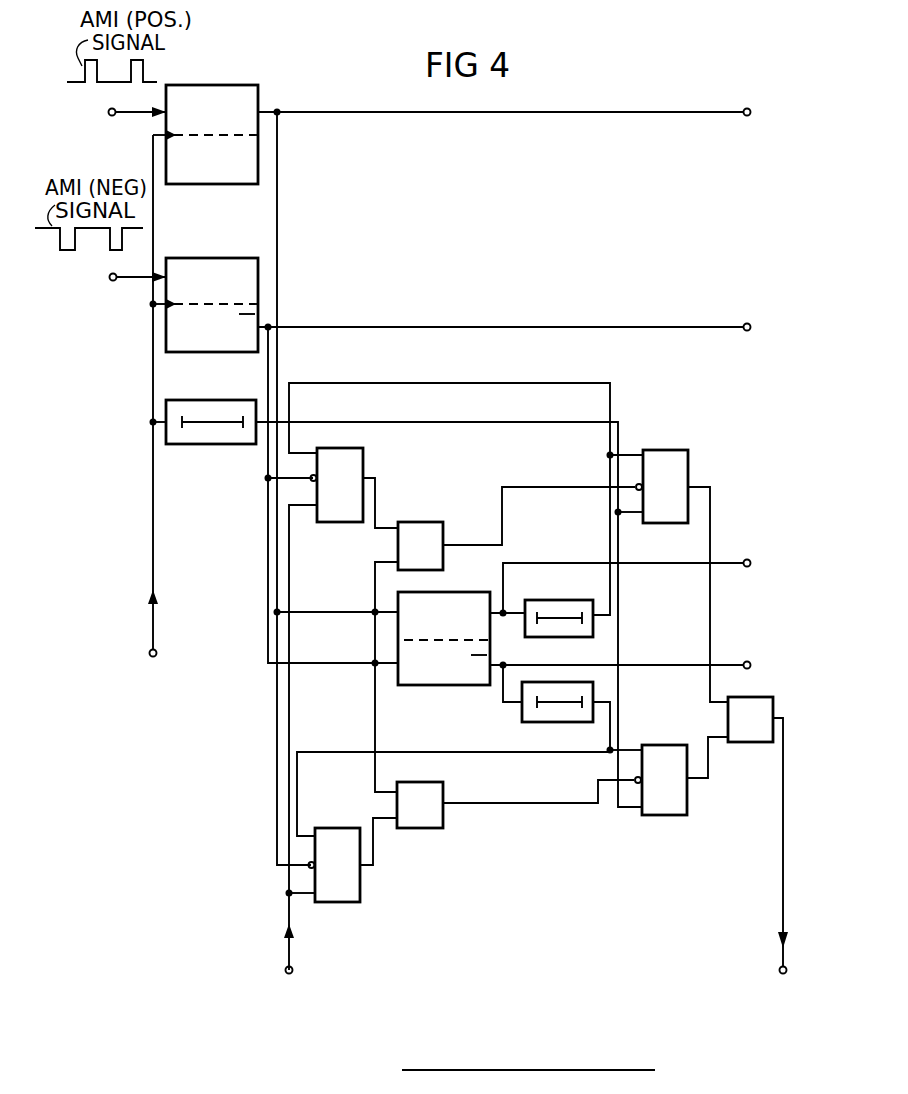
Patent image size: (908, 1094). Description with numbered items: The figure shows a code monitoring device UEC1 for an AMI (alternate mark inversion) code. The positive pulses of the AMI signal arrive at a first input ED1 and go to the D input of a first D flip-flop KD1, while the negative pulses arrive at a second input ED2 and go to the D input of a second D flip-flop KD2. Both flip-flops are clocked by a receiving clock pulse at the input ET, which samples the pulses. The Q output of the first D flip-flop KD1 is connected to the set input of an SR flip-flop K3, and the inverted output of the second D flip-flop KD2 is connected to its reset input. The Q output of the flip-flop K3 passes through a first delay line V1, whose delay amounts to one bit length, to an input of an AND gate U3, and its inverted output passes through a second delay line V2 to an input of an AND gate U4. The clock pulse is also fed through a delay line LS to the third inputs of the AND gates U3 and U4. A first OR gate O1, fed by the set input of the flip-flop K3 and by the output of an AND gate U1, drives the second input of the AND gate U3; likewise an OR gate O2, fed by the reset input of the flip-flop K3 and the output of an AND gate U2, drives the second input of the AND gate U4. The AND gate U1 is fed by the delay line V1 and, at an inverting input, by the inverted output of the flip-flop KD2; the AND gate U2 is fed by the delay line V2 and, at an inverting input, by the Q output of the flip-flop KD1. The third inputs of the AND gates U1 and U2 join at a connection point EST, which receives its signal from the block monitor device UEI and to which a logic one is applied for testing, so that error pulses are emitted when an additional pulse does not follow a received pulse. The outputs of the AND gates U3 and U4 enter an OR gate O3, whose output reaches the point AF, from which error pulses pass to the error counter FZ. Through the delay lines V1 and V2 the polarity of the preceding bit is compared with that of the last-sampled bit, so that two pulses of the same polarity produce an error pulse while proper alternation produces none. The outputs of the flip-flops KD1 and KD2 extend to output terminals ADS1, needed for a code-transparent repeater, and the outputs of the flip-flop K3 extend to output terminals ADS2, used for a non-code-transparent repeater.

The first D flip-flop KD1 is at (268, 195).
The second D flip-flop KD2 is at (244, 242).
The delay line LS is at (215, 398).
The AND gate U1 is at (382, 466).
The AND gate U2 is at (354, 828).
The AND gate U3 is at (696, 452).
The AND gate U4 is at (653, 750).
The first OR gate O1 is at (408, 530).
The OR gate O2 is at (411, 782).
The OR gate O3 is at (766, 744).
The SR flip-flop K3 is at (448, 592).
The first delay line V1 is at (600, 648).
The second delay line V2 is at (600, 658).
The first input ED1 is at (119, 112).
The second input ED2 is at (119, 278).
The clock pulse input ET is at (172, 600).
The connection point EST is at (305, 950).
The block monitor device UEI is at (307, 1005).
The output terminals ADS1 is at (515, 220).
The output terminals ADS2 is at (633, 614).
The output point AF is at (770, 849).
The error counter FZ is at (716, 1022).
The code monitoring device UEC1 is at (547, 982).